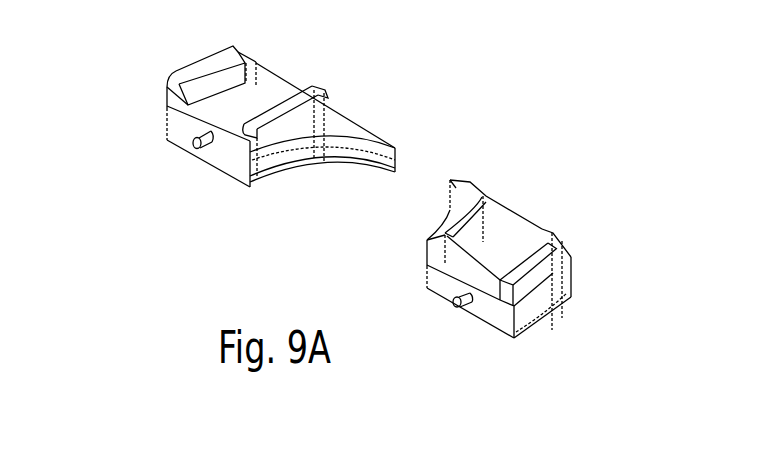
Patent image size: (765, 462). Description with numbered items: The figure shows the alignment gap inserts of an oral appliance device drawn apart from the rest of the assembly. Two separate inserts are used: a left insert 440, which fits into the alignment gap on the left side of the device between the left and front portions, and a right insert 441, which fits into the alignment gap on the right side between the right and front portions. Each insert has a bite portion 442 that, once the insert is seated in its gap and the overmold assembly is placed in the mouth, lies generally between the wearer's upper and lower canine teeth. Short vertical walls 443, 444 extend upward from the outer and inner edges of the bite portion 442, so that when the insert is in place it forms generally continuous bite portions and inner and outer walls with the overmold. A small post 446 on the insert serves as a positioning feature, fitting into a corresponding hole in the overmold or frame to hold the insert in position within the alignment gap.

The left insert 440 is at (133, 76).
The right insert 441 is at (573, 302).
The bite portion 442 is at (281, 88).
The vertical wall 443 is at (219, 51).
The vertical wall 444 is at (316, 92).
The post 446 is at (204, 152).